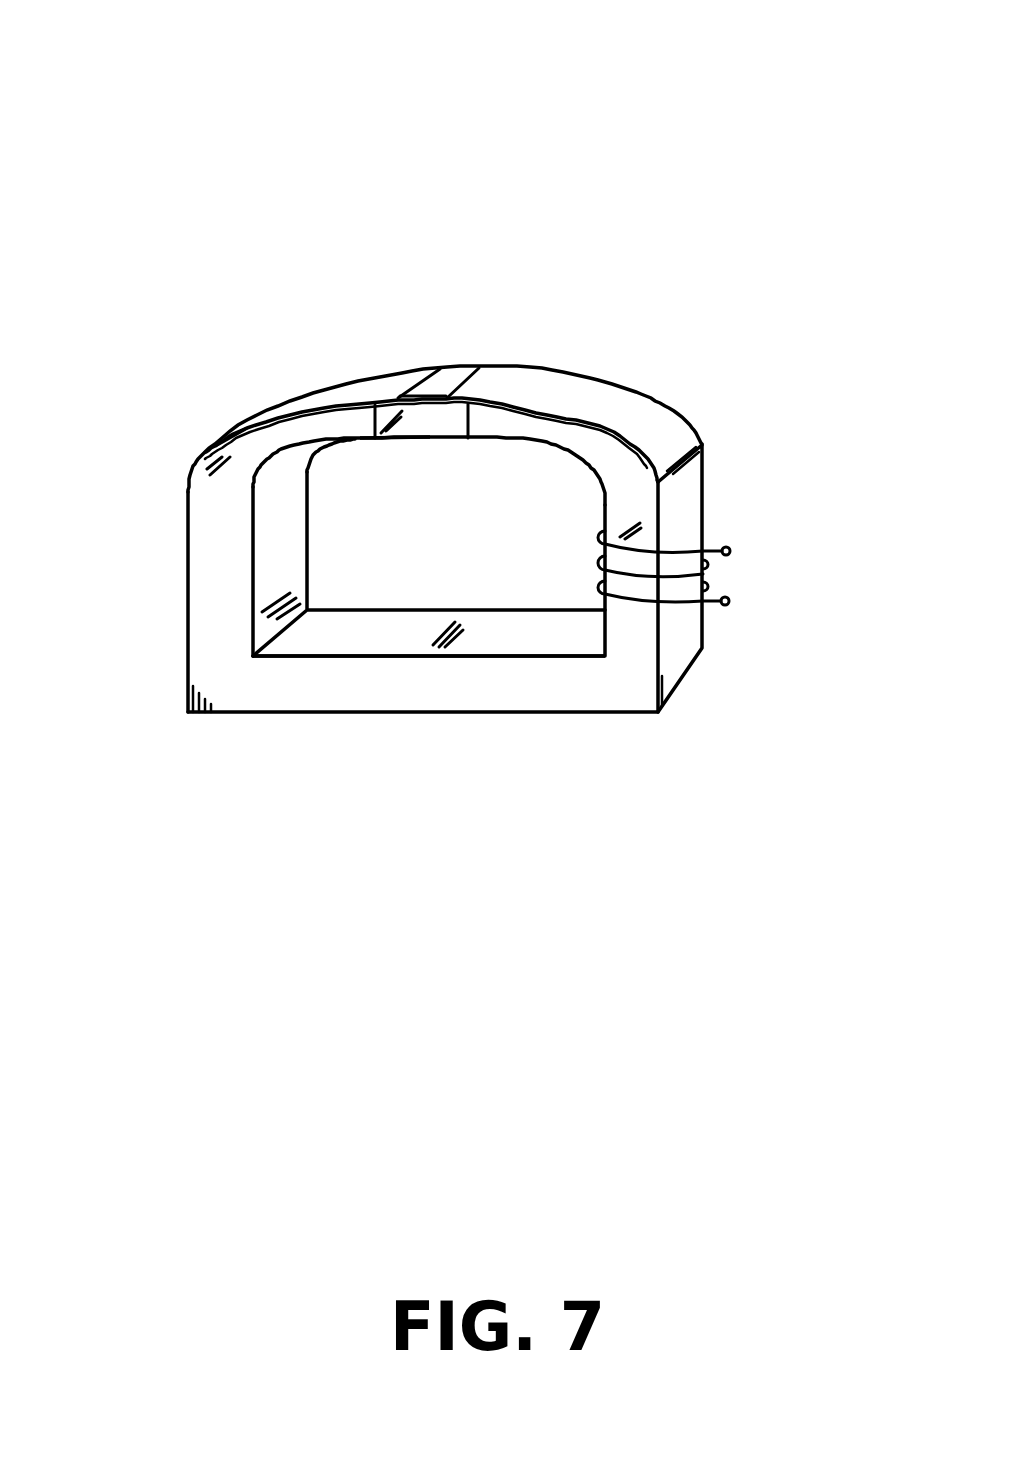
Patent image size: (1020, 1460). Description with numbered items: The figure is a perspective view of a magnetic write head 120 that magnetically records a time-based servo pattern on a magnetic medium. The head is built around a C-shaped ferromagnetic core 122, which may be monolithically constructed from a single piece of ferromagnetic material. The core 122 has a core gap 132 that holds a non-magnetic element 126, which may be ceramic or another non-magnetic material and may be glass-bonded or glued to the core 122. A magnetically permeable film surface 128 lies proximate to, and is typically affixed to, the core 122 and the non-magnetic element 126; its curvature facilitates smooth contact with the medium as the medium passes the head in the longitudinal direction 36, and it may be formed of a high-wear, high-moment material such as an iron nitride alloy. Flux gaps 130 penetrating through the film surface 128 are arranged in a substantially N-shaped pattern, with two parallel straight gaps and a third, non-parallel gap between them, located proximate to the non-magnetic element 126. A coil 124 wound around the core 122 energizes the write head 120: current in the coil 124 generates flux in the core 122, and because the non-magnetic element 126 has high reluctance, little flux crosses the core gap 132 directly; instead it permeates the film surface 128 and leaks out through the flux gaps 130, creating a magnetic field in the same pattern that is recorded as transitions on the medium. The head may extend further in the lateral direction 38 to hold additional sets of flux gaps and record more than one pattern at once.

The magnetic write head 120 is at (124, 148).
The C-shaped ferromagnetic core 122 is at (587, 684).
The coil 124 is at (735, 582).
The non-magnetic element 126 is at (460, 425).
The magnetically permeable film surface 128 is at (643, 425).
The flux gaps 130 is at (458, 340).
The core gap 132 is at (407, 466).
The longitudinal direction 36 is at (380, 340).
The lateral direction 38 is at (610, 263).